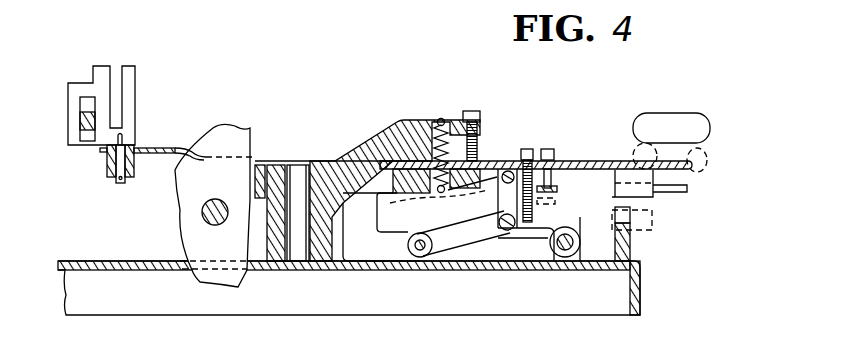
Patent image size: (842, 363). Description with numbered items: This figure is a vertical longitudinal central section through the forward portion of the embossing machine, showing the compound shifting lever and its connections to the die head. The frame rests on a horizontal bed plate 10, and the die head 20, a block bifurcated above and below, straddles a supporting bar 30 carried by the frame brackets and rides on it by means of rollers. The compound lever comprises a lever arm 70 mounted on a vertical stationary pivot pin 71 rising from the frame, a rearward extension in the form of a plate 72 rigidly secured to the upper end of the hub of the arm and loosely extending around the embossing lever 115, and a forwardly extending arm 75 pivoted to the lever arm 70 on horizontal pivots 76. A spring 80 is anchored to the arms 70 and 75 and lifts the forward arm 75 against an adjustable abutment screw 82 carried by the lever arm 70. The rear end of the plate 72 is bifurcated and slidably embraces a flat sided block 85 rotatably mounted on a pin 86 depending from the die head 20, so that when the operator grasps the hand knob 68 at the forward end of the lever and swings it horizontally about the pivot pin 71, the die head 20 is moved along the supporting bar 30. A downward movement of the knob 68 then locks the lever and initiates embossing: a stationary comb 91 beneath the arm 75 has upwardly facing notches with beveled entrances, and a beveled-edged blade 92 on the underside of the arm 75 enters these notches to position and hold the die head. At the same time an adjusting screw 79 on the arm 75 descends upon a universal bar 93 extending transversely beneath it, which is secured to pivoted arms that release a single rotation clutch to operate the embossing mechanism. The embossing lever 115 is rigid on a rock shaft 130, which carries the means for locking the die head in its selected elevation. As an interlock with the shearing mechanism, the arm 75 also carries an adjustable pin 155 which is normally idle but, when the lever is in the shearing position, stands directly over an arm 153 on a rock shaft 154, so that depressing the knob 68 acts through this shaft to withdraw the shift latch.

The bed plate 10 is at (163, 260).
The die head 20 is at (132, 88).
The supporting bar 30 is at (80, 122).
The hand knob 68 is at (698, 127).
The lever arm 70 is at (360, 157).
The vertical stationary pivot pin 71 is at (307, 162).
The plate 72 is at (193, 139).
The forwardly extending arm 75 is at (594, 160).
The horizontal pivots 76 is at (338, 173).
The adjusting screw 79 is at (549, 158).
The spring 80 is at (434, 150).
The adjustable abutment screw 82 is at (477, 141).
The flat sided block 85 is at (108, 162).
The pin 86 is at (118, 184).
The stationary comb 91 is at (630, 215).
The beveled-edged blade 92 is at (690, 188).
The universal bar 93 is at (556, 192).
The embossing lever 115 is at (233, 128).
The rock shaft 130 is at (230, 190).
The arm 153 is at (535, 229).
The rock shaft 154 is at (570, 257).
The adjustable pin 155 is at (535, 218).